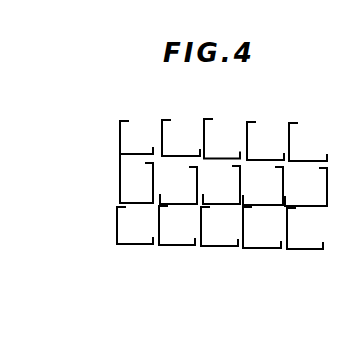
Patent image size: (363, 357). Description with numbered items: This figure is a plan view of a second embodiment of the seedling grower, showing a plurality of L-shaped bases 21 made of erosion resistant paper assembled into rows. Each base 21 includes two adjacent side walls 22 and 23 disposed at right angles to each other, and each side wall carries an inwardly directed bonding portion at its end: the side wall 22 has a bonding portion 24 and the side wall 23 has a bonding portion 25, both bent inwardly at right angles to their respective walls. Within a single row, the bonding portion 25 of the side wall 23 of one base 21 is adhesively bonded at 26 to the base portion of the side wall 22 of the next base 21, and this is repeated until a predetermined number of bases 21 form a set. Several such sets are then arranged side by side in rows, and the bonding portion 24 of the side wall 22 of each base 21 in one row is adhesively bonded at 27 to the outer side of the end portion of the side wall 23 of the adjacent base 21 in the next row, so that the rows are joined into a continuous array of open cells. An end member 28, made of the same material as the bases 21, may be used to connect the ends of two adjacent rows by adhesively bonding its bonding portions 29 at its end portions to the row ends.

The base 21 is at (120, 247).
The side wall 22 is at (115, 243).
The side wall 23 is at (137, 247).
The bonding portion 24 is at (117, 219).
The bonding portion 25 is at (150, 246).
The adhesive bond 26 is at (154, 246).
The adhesive bond 27 is at (118, 200).
The end member 28 is at (118, 175).
The bonding portion 29 is at (120, 162).